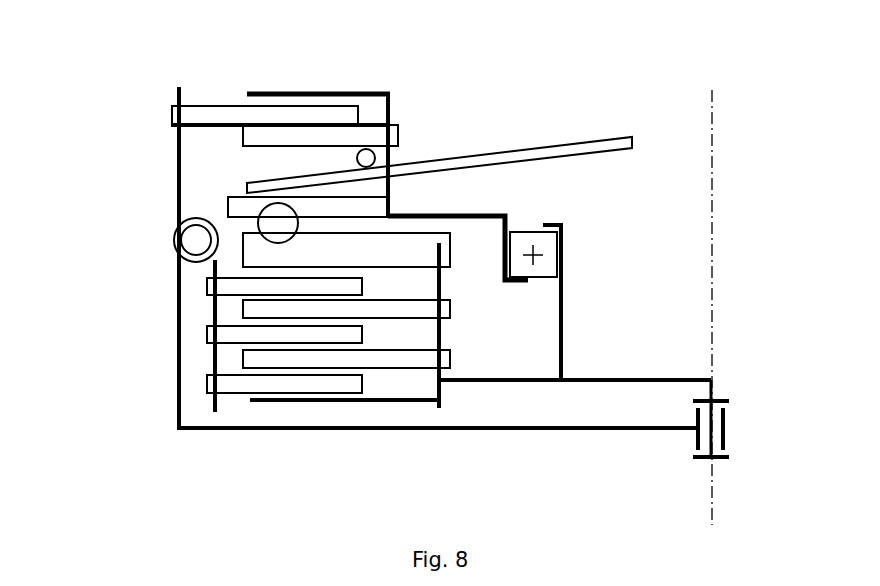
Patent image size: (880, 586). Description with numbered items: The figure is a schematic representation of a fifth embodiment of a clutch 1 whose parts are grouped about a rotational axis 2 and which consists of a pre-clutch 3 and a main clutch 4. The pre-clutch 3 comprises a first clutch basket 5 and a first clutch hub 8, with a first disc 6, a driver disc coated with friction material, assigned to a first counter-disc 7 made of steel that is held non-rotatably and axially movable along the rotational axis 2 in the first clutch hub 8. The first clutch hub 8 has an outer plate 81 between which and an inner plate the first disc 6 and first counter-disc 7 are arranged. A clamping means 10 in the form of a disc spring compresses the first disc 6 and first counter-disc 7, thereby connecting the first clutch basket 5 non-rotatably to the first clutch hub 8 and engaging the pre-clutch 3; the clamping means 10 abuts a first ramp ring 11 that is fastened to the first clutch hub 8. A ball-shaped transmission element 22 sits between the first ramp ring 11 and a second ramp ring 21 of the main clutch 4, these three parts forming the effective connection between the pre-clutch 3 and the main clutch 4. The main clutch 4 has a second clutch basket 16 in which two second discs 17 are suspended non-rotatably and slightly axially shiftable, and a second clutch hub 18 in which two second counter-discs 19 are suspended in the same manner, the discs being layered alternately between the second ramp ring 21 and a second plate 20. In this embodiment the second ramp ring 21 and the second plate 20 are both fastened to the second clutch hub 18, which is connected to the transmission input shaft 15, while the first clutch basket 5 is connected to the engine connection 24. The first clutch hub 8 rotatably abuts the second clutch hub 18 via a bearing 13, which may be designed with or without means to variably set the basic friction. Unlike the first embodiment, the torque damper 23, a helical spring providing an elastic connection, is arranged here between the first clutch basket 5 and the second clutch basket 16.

The clutch 1 is at (656, 51).
The rotational axis 2 is at (714, 275).
The pre-clutch 3 is at (378, 72).
The main clutch 4 is at (129, 296).
The first clutch basket 5 is at (176, 150).
The first disc 6 is at (217, 110).
The first counter-disc 7 is at (250, 137).
The first clutch hub 8 is at (392, 112).
The clamping means 10 is at (552, 143).
The first ramp ring 11 is at (392, 207).
The bearing 13 is at (548, 238).
The transmission input shaft 15 is at (716, 462).
The second clutch basket 16 is at (210, 355).
The second discs 17 is at (207, 285).
The second clutch hub 18 is at (445, 337).
The second counter-discs 19 is at (452, 304).
The second plate 20 is at (393, 404).
The second ramp ring 21 is at (508, 232).
The transmission element 22 is at (278, 203).
The torque damper 23 is at (194, 242).
The engine connection 24 is at (697, 440).
The outer plate 81 is at (280, 92).